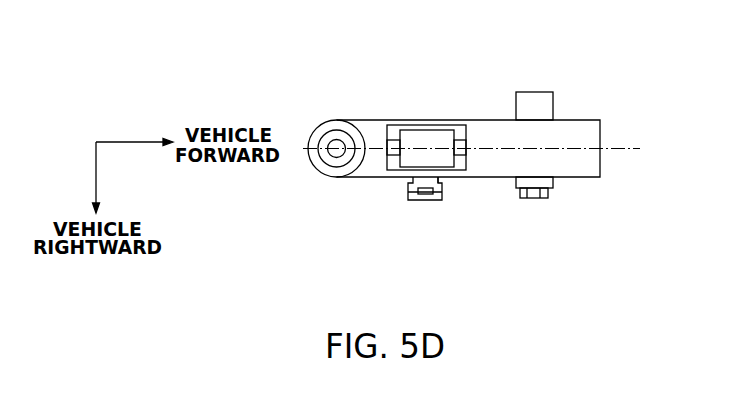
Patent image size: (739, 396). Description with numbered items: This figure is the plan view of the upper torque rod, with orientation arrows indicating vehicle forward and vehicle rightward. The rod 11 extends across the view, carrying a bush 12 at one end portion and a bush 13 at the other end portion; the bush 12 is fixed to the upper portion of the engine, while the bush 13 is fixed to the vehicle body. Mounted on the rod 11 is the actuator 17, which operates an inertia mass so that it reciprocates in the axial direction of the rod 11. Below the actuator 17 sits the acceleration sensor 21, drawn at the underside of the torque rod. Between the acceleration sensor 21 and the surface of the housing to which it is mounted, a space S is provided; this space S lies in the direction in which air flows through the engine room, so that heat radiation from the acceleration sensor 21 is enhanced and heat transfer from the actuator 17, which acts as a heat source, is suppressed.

The rod 11 is at (395, 140).
The bush 12 is at (568, 123).
The bush 13 is at (324, 121).
The actuator 17 is at (440, 135).
The acceleration sensor 21 is at (422, 201).
The space S is at (452, 185).